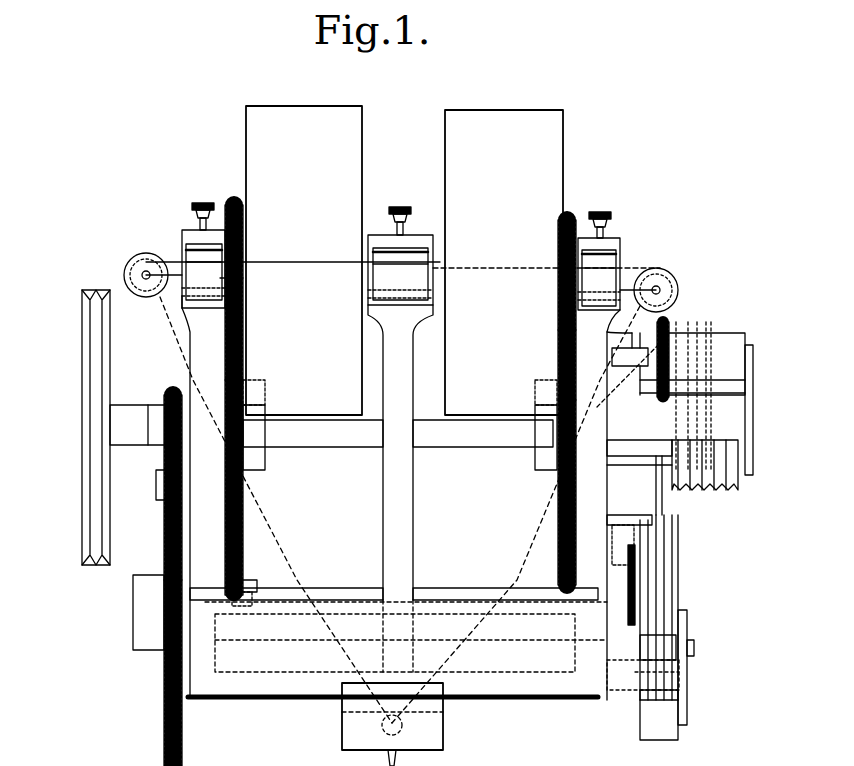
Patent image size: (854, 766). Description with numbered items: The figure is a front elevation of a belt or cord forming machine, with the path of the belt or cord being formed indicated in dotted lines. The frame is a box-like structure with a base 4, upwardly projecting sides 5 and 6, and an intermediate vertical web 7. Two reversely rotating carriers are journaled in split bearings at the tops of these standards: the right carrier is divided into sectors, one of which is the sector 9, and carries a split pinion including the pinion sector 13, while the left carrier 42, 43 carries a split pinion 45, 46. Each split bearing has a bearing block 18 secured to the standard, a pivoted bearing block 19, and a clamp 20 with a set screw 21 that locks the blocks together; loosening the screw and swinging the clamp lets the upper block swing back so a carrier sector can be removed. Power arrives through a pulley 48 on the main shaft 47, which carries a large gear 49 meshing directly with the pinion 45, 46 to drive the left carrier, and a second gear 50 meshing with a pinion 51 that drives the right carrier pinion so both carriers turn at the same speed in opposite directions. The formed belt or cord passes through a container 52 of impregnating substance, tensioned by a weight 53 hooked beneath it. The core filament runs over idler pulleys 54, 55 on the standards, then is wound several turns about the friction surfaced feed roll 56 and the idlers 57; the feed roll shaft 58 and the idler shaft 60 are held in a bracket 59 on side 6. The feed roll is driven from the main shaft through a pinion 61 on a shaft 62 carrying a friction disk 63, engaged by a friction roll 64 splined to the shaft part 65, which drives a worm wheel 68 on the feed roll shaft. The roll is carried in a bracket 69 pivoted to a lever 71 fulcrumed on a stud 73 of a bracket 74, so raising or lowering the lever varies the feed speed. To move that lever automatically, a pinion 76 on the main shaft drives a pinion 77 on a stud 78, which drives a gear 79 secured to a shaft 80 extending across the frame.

The base 4 is at (580, 700).
The side 5 is at (192, 331).
The side 6 is at (608, 502).
The intermediate vertical web 7 is at (413, 510).
The carrier sector 9 is at (554, 136).
The pinion sector 13 is at (566, 222).
The bearing block 18 is at (615, 268).
The bearing block 19 is at (613, 252).
The clamp 20 is at (610, 236).
The set screw 21 is at (598, 213).
The carrier sector 42 is at (312, 108).
The carrier sector 43 is at (360, 374).
The pinion sector 45 is at (245, 232).
The pinion sector 46 is at (245, 278).
The main shaft 47 is at (352, 442).
The pulley 48 is at (82, 497).
The large gear 49 is at (243, 508).
The second gear 50 is at (558, 498).
The pinion 51 is at (558, 343).
The container 52 is at (444, 728).
The weight 53 is at (380, 765).
The idler pulley 54 is at (148, 255).
The idler pulley 55 is at (672, 282).
The feed roll 56 is at (735, 345).
The idlers 57 is at (688, 487).
The shaft 58 is at (630, 375).
The bracket 59 is at (740, 412).
The shaft 60 is at (652, 466).
The pinion 61 is at (244, 584).
The shaft 62 is at (453, 590).
The friction disk 63 is at (632, 553).
The friction roll 64 is at (665, 678).
The shaft part 65 is at (656, 560).
The worm wheel 68 is at (672, 328).
The bracket 69 is at (665, 715).
The lever 71 is at (688, 628).
The stud 73 is at (695, 648).
The bracket 74 is at (680, 580).
The pinion 76 is at (166, 397).
The second pinion 77 is at (165, 460).
The stud 78 is at (158, 488).
The gear 79 is at (162, 704).
The shaft 80 is at (538, 626).